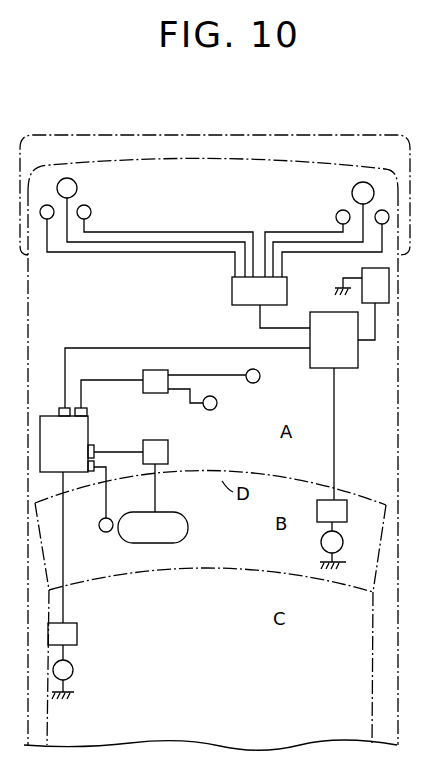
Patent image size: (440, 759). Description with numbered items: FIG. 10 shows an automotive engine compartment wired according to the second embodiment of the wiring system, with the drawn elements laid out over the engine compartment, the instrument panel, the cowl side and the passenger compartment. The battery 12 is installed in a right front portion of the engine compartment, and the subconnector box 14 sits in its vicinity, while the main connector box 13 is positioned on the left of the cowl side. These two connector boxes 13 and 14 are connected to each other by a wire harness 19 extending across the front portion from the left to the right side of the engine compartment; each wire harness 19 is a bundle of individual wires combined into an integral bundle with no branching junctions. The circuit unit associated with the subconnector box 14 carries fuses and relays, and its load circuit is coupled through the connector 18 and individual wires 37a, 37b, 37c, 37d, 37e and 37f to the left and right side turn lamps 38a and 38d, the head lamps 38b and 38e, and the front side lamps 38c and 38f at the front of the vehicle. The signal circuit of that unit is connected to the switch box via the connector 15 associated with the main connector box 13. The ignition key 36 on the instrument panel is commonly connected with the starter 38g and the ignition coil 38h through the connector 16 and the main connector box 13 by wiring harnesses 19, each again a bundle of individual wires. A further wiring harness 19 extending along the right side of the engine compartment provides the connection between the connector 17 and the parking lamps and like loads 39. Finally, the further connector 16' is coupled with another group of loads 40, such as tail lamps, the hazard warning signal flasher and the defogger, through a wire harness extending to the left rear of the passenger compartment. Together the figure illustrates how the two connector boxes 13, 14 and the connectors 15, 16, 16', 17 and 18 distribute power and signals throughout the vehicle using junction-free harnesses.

The battery 12 is at (362, 285).
The main connector box 13 is at (67, 440).
The subconnector box 14 is at (334, 340).
The connector 15 is at (131, 452).
The connector 16 is at (155, 381).
The further connector 16' is at (62, 634).
The connector 17 is at (332, 511).
The connector 18 is at (259, 291).
The wire harness 19 is at (334, 448).
The ignition key 36 is at (94, 501).
The individual wire 37a is at (140, 252).
The individual wire 37b is at (205, 243).
The individual wire 37c is at (157, 232).
The individual wire 37d is at (362, 252).
The individual wire 37e is at (274, 257).
The individual wire 37f is at (300, 232).
The left side turn lamp 38a is at (44, 202).
The head lamp 38b is at (83, 189).
The front side lamp 38c is at (98, 214).
The right side turn lamp 38d is at (389, 210).
The head lamp 38e is at (348, 193).
The front side lamp 38f is at (330, 219).
The starter 38g is at (220, 386).
The ignition coil 38h is at (196, 409).
The parking lamps and like loads 39 is at (242, 516).
The group of loads 40 is at (74, 672).